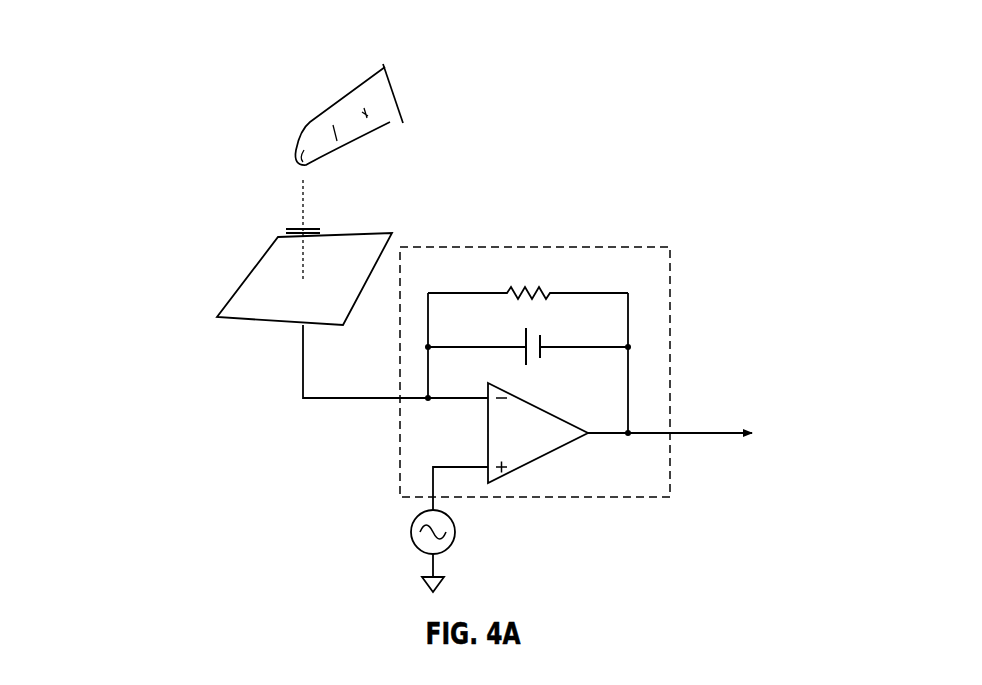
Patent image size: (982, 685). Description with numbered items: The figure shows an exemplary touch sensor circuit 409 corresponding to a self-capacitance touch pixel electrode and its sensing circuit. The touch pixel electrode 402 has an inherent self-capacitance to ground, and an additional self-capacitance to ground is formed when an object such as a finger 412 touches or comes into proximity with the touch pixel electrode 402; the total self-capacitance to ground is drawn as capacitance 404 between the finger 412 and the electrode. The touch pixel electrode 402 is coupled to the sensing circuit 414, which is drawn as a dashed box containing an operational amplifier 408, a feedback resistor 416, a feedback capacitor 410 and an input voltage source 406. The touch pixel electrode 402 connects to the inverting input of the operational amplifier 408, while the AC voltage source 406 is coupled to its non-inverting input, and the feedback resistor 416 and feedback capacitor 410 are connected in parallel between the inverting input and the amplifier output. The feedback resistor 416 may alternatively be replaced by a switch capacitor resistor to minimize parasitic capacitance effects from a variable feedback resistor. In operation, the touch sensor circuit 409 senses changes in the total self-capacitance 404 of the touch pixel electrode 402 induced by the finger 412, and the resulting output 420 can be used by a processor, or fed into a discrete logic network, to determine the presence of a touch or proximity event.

The touch sensor circuit 409 is at (252, 109).
The finger 412 is at (395, 88).
The capacitance 404 is at (317, 227).
The touch pixel electrode 402 is at (243, 313).
The sensing circuit 414 is at (635, 248).
The feedback resistor 416 is at (526, 291).
The feedback capacitor 410 is at (541, 340).
The operational amplifier 408 is at (545, 455).
The output 420 is at (703, 433).
The voltage source 406 is at (455, 530).